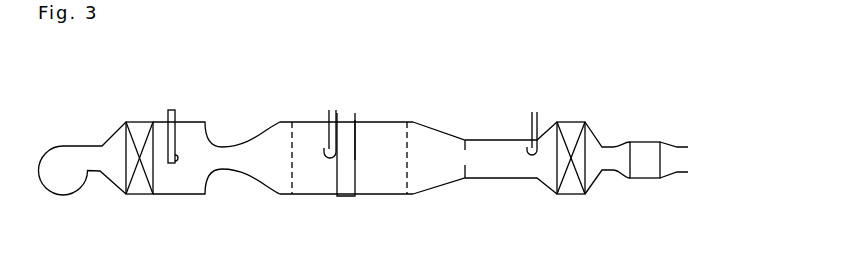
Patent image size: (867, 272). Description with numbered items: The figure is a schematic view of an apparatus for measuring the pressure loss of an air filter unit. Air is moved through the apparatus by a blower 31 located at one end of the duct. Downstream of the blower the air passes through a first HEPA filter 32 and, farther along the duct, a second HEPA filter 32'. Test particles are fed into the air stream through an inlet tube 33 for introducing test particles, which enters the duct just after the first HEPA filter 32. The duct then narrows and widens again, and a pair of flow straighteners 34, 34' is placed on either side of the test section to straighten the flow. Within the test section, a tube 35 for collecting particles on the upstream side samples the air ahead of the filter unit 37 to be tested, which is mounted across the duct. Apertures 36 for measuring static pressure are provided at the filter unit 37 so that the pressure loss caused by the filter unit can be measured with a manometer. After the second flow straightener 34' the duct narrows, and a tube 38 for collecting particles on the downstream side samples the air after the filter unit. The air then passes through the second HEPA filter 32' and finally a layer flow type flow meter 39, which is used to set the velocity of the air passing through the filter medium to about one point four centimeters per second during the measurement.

The blower 31 is at (65, 195).
The HEPA filter 32 is at (131, 188).
The HEPA filter 32' is at (567, 188).
The inlet tube for introducing test particles 33 is at (165, 122).
The flow straightener 34 is at (277, 188).
The flow straightener 34' is at (426, 188).
The tube for collecting particles on the upstream side 35 is at (327, 152).
The apertures for measuring static pressure 36 is at (330, 197).
The filter unit to be tested 37 is at (355, 155).
The tube for collecting particles on the downstream side 38 is at (527, 150).
The layer flow type flow meter 39 is at (642, 142).